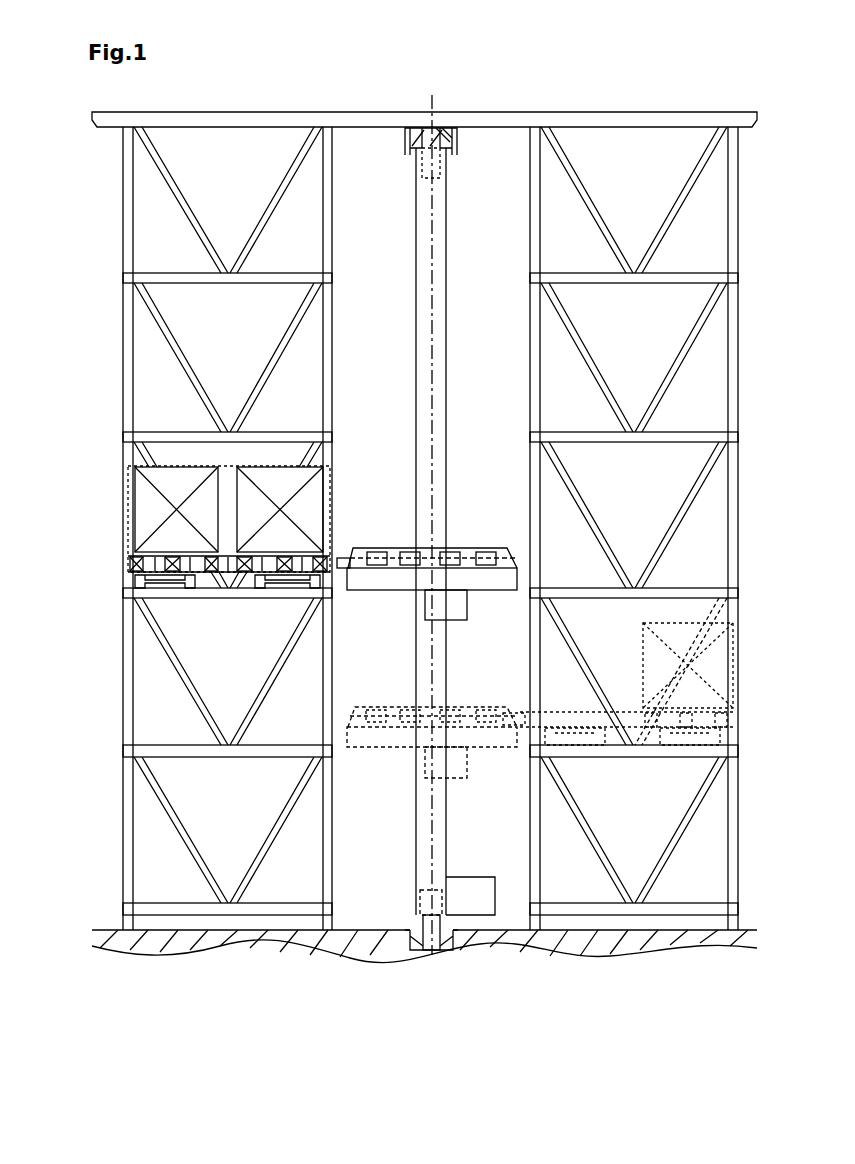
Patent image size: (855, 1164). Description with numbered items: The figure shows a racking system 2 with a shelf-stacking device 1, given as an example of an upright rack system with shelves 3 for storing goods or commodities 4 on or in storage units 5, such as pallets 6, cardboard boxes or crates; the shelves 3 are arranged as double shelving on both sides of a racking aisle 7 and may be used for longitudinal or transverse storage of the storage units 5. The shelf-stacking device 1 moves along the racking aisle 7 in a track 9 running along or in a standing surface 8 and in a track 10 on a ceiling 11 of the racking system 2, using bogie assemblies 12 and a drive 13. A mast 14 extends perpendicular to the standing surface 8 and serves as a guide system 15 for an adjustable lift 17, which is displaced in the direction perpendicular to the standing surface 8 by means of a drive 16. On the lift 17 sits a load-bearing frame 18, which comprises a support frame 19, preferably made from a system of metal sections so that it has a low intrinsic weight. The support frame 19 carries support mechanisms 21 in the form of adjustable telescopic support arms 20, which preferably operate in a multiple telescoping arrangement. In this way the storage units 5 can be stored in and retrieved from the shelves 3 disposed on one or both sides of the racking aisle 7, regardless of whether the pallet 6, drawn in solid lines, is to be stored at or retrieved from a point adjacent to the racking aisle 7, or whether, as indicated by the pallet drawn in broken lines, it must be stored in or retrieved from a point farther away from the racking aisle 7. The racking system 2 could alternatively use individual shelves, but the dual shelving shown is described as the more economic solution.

The shelf-stacking device 1 is at (366, 882).
The racking system 2 is at (108, 172).
The shelf 3 is at (251, 940).
The commodities 4 is at (246, 500).
The storage unit 5 is at (262, 590).
The pallet 6 is at (306, 574).
The racking aisle 7 is at (506, 130).
The standing surface 8 is at (556, 935).
The track 9 is at (451, 952).
The track 10 is at (446, 130).
The ceiling 11 is at (569, 122).
The bogie assembly 12 is at (414, 938).
The drive 13 is at (473, 905).
The mast 14 is at (441, 300).
The guide system 15 is at (451, 342).
The drive 16 is at (456, 598).
The lift 17 is at (488, 580).
The load-bearing frame 18 is at (473, 520).
The support frame 19 is at (250, 576).
The telescopic support arm 20 is at (356, 553).
The support mechanism 21 is at (343, 528).